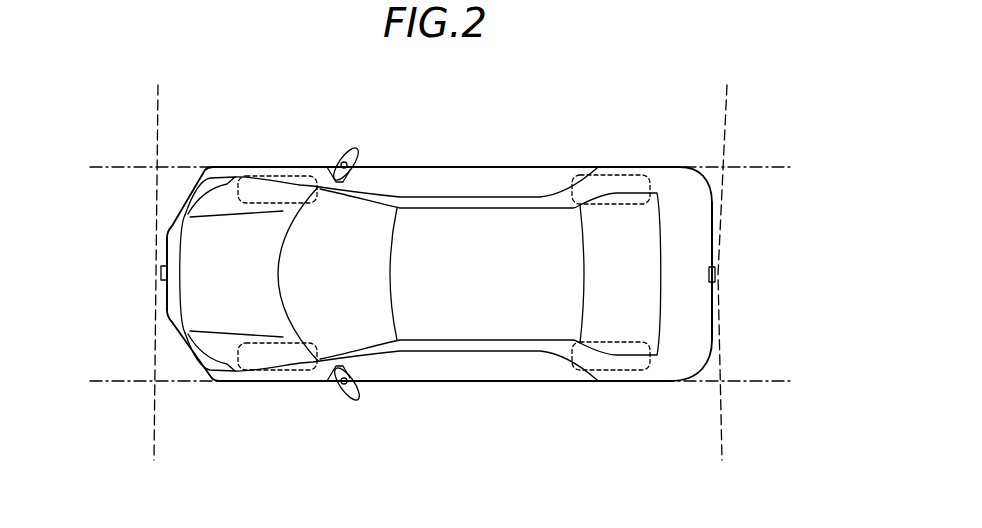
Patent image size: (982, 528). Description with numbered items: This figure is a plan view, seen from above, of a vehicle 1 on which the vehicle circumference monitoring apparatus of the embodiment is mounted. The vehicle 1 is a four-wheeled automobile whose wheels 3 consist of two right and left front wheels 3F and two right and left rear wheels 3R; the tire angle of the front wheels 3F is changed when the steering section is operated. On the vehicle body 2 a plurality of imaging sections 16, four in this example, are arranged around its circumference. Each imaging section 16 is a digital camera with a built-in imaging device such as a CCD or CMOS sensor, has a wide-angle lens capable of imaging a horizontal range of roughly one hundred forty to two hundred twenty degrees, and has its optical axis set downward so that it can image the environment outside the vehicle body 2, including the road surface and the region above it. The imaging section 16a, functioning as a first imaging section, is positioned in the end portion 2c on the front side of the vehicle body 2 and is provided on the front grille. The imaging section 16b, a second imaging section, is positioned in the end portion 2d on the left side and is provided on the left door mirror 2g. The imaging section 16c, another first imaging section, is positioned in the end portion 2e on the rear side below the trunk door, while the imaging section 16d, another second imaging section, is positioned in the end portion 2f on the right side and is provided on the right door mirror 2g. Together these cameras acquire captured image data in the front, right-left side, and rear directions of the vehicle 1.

The vehicle 1 is at (539, 91).
The vehicle body 2 is at (670, 163).
The end portion of front side 2c is at (165, 306).
The end portion of left side 2d is at (522, 382).
The end portion of rear side 2e is at (717, 297).
The end portion of right side 2f is at (531, 166).
The door mirror 2g is at (357, 150).
The wheels 3 is at (444, 275).
The front wheels 3F is at (279, 173).
The rear wheels 3R is at (608, 173).
The imaging sections 16 is at (437, 288).
The imaging section 16a is at (160, 273).
The imaging section 16b is at (342, 398).
The imaging section 16c is at (717, 273).
The imaging section 16d is at (344, 148).